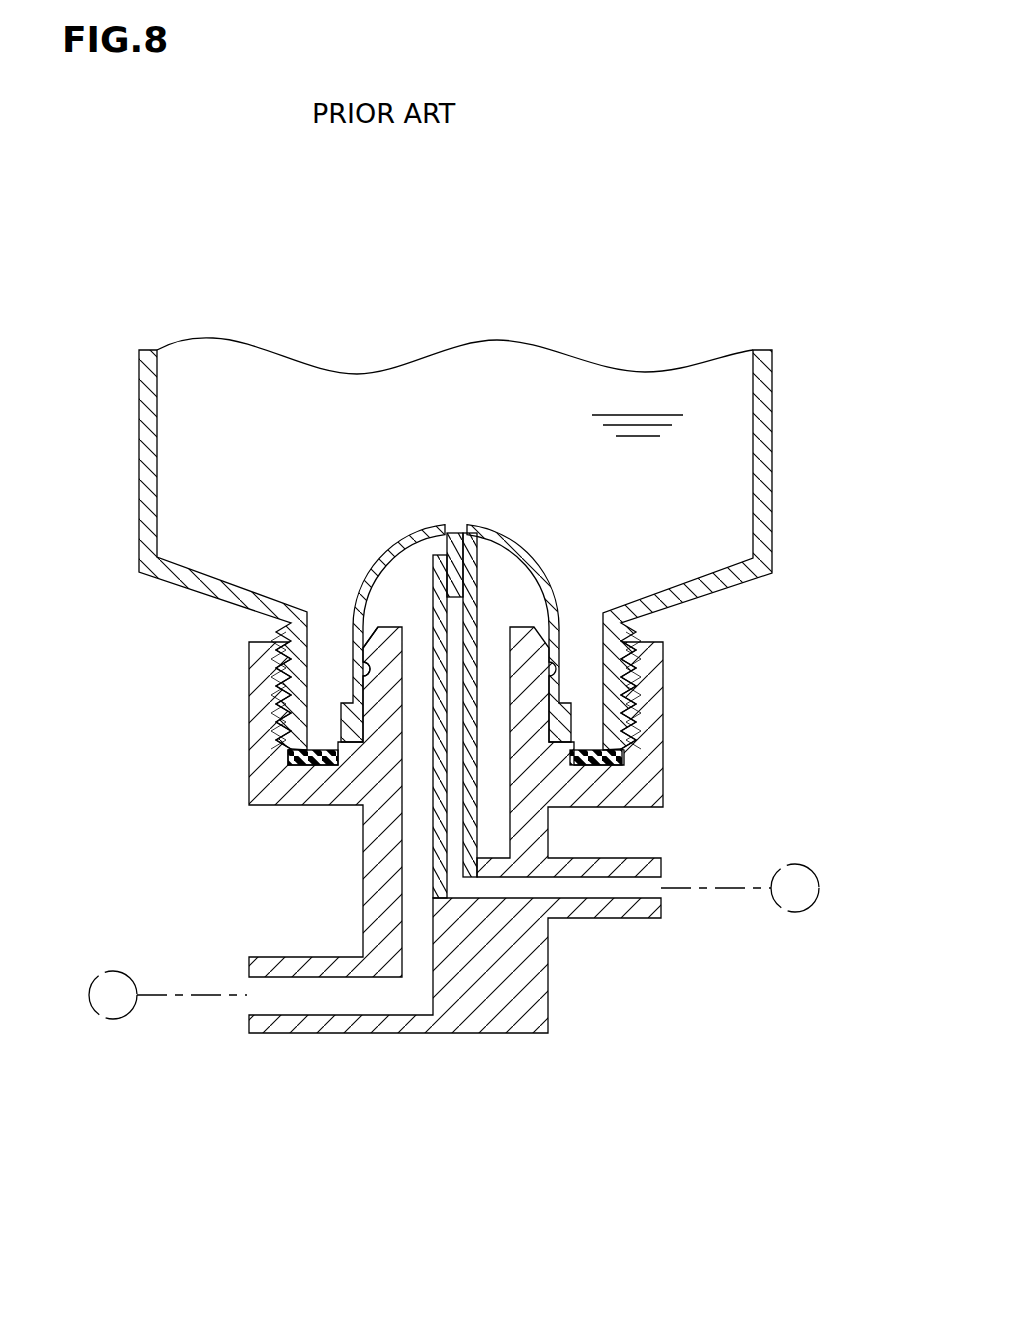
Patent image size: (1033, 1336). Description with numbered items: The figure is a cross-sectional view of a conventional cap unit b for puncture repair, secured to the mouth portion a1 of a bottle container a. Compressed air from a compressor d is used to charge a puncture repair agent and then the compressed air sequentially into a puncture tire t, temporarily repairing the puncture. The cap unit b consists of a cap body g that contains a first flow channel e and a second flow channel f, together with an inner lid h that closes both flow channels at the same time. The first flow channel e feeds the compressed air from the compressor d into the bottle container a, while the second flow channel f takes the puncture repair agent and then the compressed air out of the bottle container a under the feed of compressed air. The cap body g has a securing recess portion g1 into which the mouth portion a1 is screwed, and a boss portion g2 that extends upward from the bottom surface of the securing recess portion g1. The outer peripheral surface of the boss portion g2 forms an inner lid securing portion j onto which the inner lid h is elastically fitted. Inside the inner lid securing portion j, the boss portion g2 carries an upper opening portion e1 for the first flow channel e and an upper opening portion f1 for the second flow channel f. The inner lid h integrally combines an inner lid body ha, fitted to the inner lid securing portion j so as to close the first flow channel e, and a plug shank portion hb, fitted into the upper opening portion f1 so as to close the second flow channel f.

The bottle container a is at (446, 509).
The mouth portion a1 is at (308, 678).
The cap unit b is at (477, 648).
The compressor d is at (100, 1015).
The first flow channel e is at (284, 1010).
The upper opening portion e1 is at (420, 622).
The second flow channel f is at (537, 663).
The upper opening portion f1 is at (456, 553).
The cap body g is at (459, 665).
The securing recess portion g1 is at (300, 740).
The boss portion g2 is at (386, 661).
The inner lid h is at (548, 502).
The inner lid body ha is at (362, 649).
The plug shank portion hb is at (548, 556).
The inner lid securing portion j is at (553, 724).
The puncture tire t is at (806, 910).